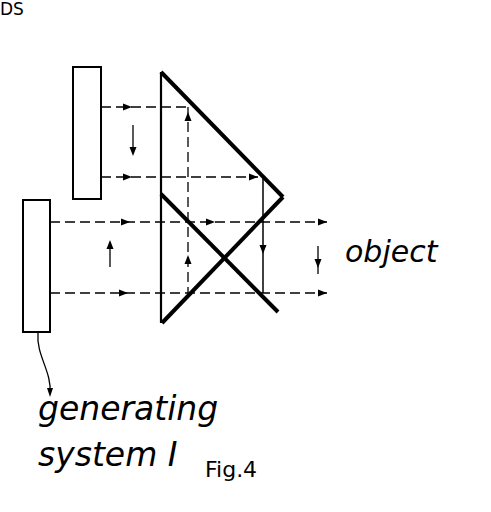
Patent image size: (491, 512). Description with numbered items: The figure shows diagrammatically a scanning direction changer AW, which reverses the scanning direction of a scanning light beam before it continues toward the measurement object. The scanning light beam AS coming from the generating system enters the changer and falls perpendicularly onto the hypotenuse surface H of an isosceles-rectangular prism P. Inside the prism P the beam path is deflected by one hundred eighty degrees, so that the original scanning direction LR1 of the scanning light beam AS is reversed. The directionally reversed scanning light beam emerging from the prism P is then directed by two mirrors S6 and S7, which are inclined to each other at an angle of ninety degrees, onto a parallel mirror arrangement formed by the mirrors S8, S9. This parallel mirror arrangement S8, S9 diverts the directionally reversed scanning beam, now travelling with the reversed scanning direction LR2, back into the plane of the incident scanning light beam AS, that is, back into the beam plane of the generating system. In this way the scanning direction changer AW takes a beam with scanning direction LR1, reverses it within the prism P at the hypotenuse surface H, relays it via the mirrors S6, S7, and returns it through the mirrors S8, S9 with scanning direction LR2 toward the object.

The scanning direction changer AW is at (247, 73).
The isosceles-rectangular prism P is at (216, 150).
The hypotenuse surface H is at (161, 316).
The mirror of parallel mirror arrangement S8 is at (212, 127).
The mirror of parallel mirror arrangement S9 is at (252, 292).
The mirror S6 is at (87, 67).
The mirror S7 is at (87, 133).
The scanning light beam AS is at (50, 289).
The scanning direction LR1 is at (110, 286).
The scanning direction LR2 is at (318, 248).